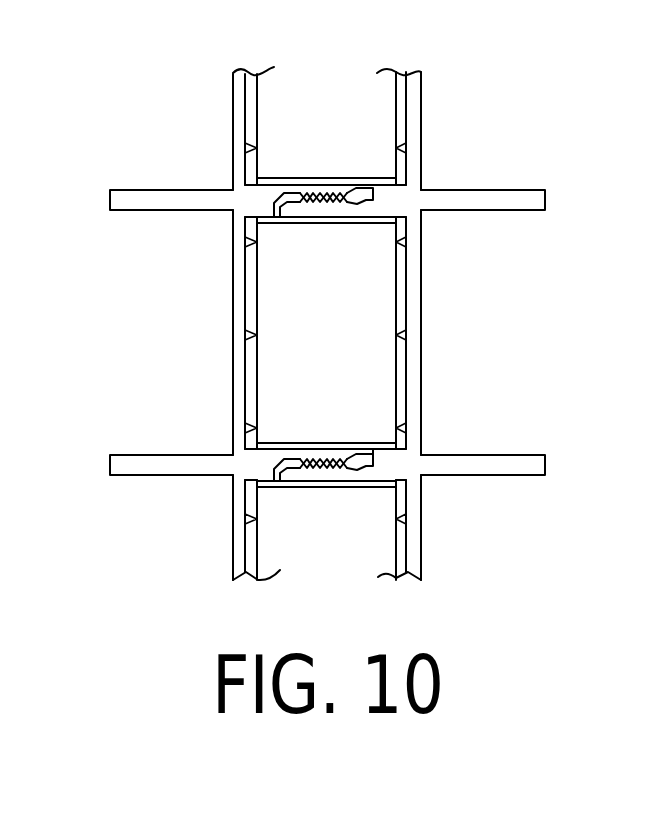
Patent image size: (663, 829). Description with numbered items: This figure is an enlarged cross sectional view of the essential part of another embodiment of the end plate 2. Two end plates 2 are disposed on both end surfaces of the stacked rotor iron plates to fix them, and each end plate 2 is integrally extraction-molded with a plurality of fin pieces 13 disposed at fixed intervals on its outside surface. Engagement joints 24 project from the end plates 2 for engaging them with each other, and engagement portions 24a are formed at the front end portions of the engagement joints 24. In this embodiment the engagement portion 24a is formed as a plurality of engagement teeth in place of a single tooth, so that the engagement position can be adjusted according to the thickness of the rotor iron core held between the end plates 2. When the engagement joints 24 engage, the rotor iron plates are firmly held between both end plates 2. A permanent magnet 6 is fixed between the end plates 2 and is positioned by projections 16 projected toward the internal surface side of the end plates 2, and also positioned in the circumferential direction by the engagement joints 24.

The end plate 2 is at (421, 267).
The fin piece 13 is at (158, 200).
The permanent magnet 6 is at (278, 380).
The projection 16 is at (398, 426).
The engagement joint 24 is at (326, 253).
The engagement portion 24a is at (344, 192).